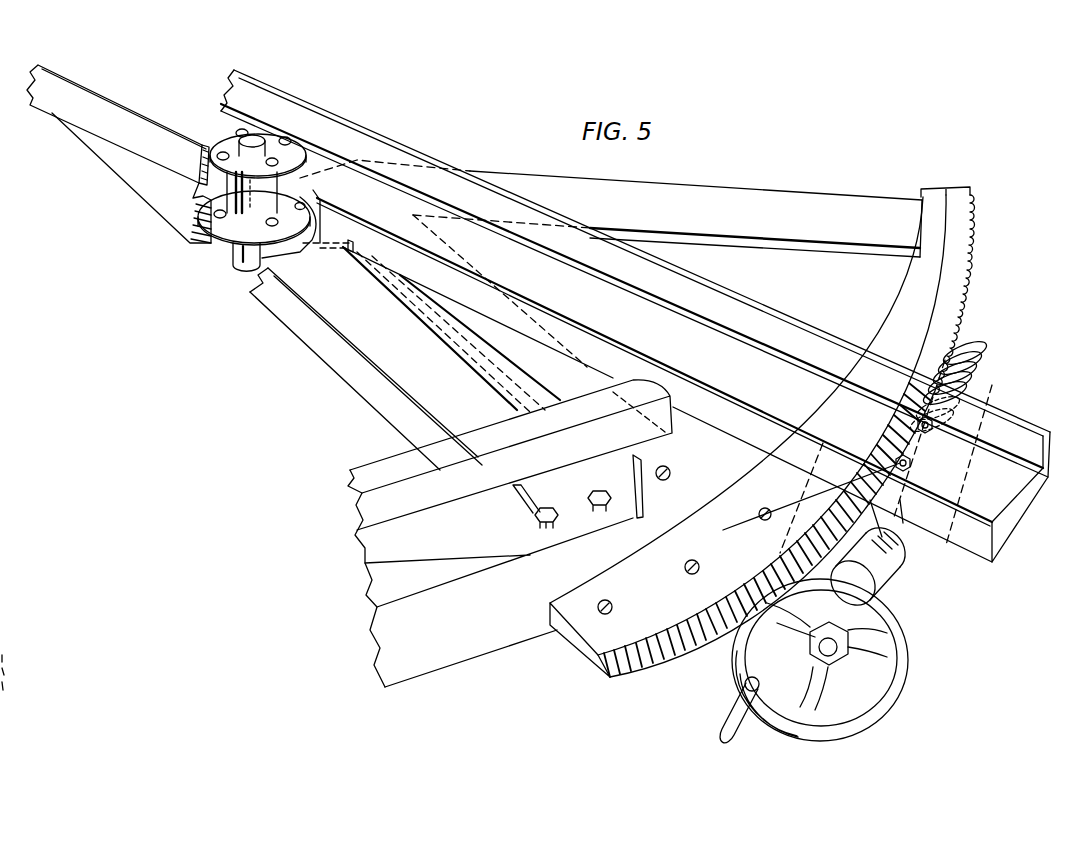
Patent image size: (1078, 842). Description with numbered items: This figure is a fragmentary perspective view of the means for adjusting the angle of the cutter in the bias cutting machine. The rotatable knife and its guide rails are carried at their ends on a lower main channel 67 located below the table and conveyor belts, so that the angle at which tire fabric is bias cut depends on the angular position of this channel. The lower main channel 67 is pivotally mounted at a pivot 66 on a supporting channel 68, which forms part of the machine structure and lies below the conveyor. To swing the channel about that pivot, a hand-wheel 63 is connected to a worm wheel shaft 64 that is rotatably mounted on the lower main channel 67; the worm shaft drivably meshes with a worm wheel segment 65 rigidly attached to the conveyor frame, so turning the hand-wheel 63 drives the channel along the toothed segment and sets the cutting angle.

The hand-wheel 63 is at (887, 700).
The worm wheel shaft 64 is at (903, 550).
The worm wheel segment 65 is at (610, 677).
The pivot 66 is at (242, 225).
The lower main channel 67 is at (1002, 410).
The supporting channel 68 is at (358, 378).